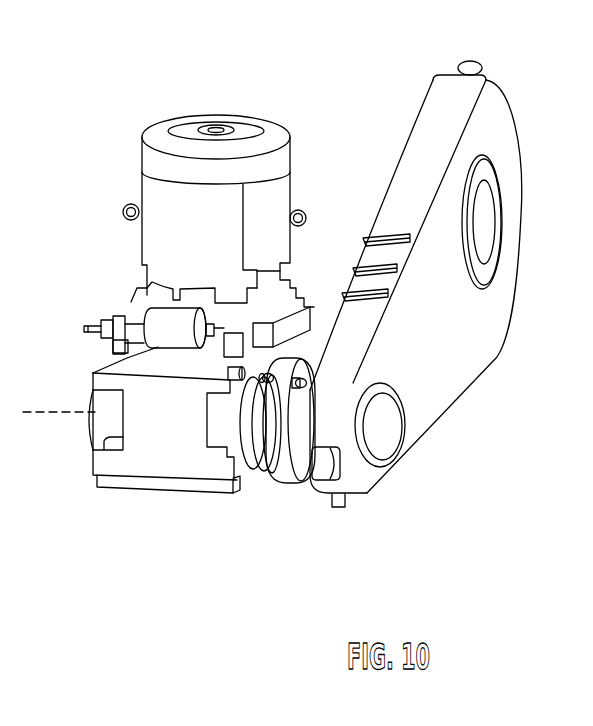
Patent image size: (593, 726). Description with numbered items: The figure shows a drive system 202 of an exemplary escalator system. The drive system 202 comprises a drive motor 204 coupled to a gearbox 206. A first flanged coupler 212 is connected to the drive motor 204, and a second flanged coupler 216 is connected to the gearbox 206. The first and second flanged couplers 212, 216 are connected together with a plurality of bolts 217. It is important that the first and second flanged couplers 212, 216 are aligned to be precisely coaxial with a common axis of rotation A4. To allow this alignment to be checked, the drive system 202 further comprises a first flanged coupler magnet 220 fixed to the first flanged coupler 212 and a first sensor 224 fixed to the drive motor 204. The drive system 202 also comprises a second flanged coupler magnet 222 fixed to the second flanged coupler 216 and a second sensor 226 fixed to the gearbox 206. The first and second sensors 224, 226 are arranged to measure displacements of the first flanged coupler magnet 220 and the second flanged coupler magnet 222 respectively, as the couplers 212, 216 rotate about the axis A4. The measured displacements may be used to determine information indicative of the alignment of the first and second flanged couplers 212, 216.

The drive system 202 is at (268, 84).
The drive motor 204 is at (173, 443).
The gearbox 206 is at (367, 480).
The first flanged coupler 212 is at (275, 432).
The second flanged coupler 216 is at (289, 455).
The bolts 217 is at (272, 455).
The first flanged coupler magnet 220 is at (266, 377).
The second flanged coupler magnet 222 is at (301, 378).
The first sensor 224 is at (236, 368).
The second sensor 226 is at (306, 385).
The common axis of rotation A4 is at (378, 430).